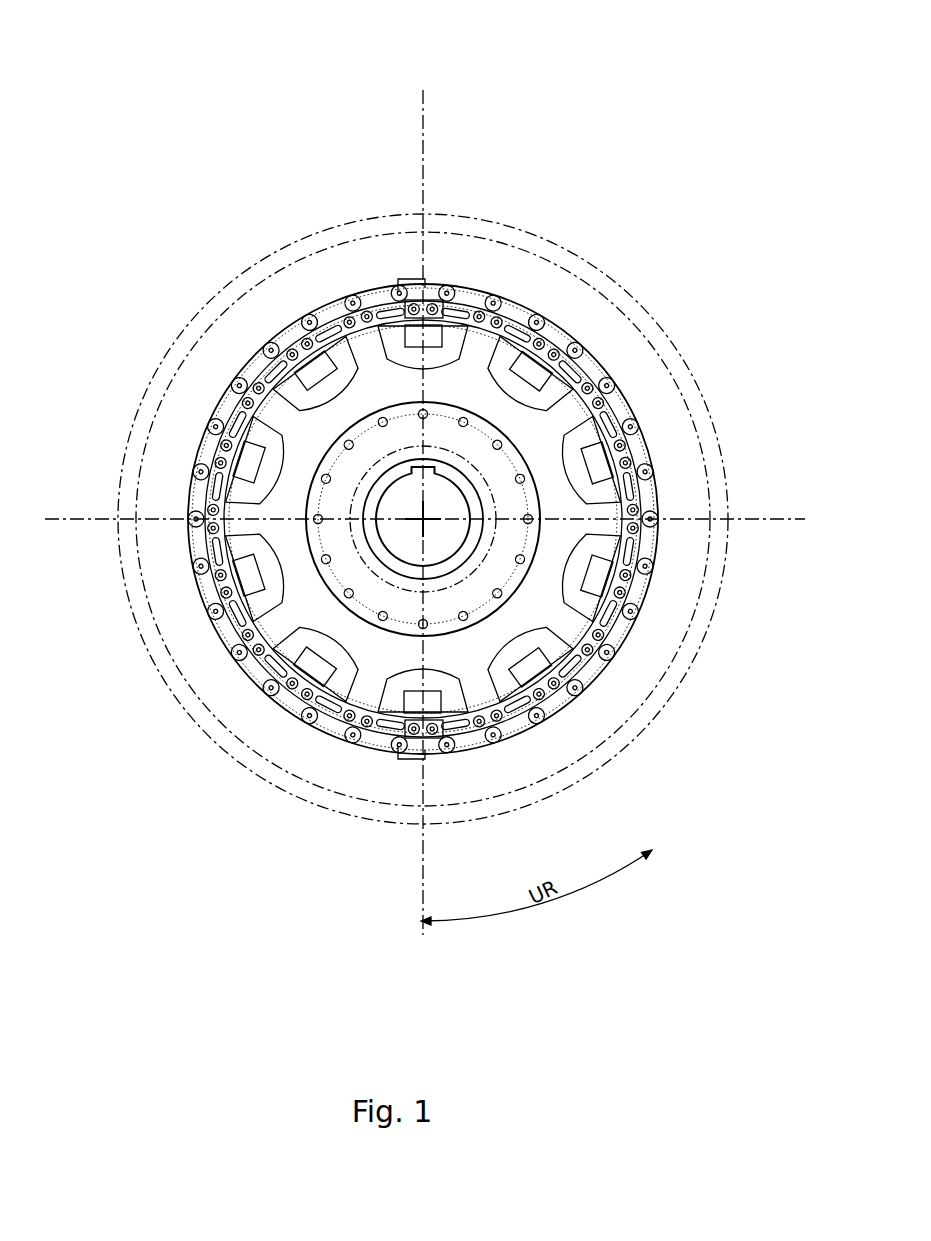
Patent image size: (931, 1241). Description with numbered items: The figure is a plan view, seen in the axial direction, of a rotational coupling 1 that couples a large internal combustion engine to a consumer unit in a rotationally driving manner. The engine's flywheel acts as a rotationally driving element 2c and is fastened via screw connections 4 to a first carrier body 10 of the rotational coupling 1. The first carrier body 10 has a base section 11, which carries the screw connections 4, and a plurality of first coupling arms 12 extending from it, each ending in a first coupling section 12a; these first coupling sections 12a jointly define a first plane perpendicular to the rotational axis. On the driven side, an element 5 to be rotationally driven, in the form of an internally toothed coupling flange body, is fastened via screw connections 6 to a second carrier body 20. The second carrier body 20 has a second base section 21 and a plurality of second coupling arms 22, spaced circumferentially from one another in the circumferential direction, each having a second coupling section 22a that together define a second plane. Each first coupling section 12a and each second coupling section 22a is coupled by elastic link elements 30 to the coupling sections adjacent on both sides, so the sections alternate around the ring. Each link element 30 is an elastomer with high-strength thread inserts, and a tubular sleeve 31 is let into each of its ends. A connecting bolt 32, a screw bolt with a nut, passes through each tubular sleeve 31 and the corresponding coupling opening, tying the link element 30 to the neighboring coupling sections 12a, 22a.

The rotational coupling 1 is at (673, 100).
The rotationally driving element 2c is at (523, 275).
The screw connections 4 is at (313, 313).
The element to be rotationally driven 5 is at (382, 558).
The screw connections 6 is at (382, 618).
The first carrier body 10 is at (483, 265).
The base section 11 is at (378, 291).
The first coupling arms 12 is at (600, 480).
The first coupling section 12a is at (436, 285).
The second carrier body 20 is at (548, 630).
The second base section 21 is at (297, 568).
The second coupling arms 22 is at (250, 497).
The second coupling section 22a is at (240, 382).
The elastic link elements 30 is at (540, 316).
The tubular sleeve 31 is at (307, 344).
The connecting bolt 32 is at (278, 343).